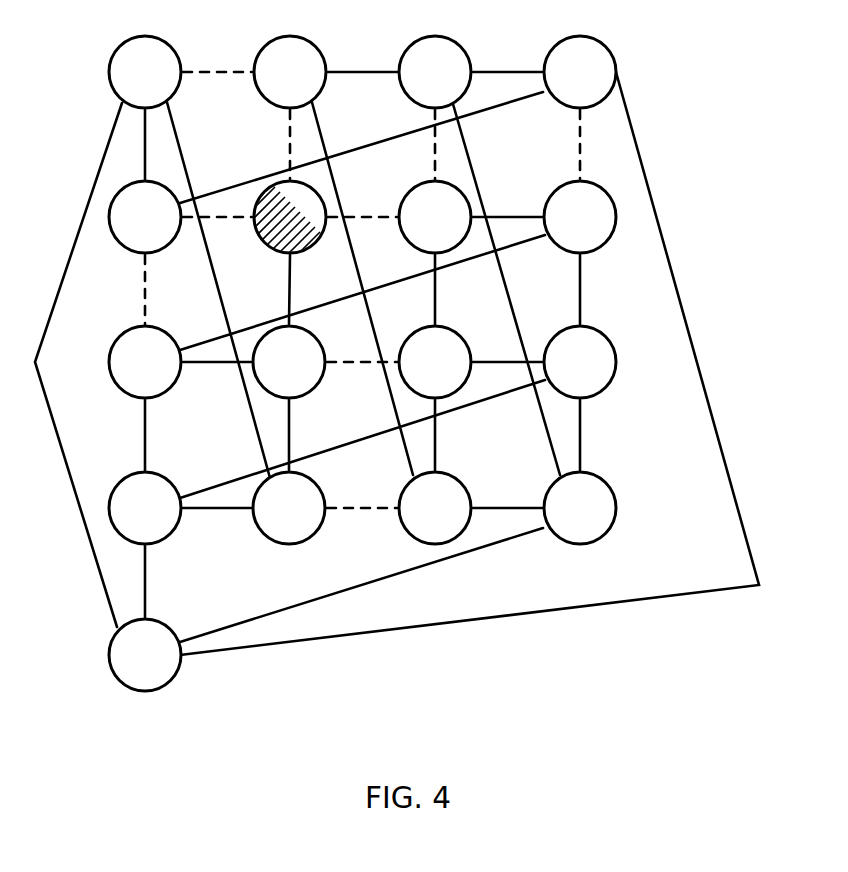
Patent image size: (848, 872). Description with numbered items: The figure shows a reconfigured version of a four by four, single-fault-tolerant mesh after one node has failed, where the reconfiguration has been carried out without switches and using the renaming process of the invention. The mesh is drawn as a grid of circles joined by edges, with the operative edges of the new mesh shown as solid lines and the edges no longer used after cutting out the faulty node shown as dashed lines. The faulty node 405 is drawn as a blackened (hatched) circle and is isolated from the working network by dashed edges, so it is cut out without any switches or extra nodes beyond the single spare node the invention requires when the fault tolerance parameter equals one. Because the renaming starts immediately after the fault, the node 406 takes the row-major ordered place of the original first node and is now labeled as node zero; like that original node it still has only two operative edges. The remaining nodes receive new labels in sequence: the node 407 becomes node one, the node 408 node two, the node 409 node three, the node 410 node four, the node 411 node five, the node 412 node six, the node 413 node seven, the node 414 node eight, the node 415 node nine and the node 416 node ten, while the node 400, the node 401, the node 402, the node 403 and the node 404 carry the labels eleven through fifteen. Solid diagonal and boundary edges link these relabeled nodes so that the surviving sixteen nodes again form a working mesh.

The node 400 is at (180, 86).
The node 401 is at (323, 85).
The node 402 is at (472, 57).
The node 403 is at (615, 55).
The node 404 is at (160, 248).
The faulty node 405 is at (268, 250).
The node 406 is at (407, 194).
The node 407 is at (556, 189).
The node 408 is at (168, 390).
The node 409 is at (313, 390).
The node 410 is at (450, 328).
The node 411 is at (614, 378).
The node 412 is at (180, 522).
The node 413 is at (323, 523).
The node 414 is at (458, 483).
The node 415 is at (614, 525).
The node 416 is at (180, 668).